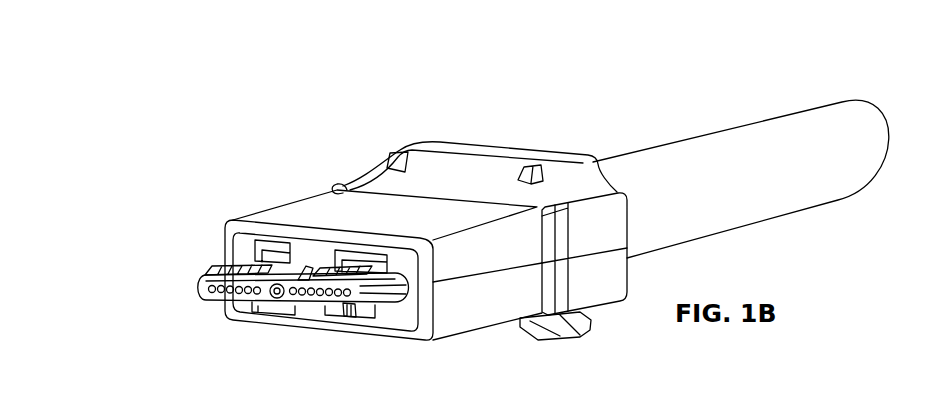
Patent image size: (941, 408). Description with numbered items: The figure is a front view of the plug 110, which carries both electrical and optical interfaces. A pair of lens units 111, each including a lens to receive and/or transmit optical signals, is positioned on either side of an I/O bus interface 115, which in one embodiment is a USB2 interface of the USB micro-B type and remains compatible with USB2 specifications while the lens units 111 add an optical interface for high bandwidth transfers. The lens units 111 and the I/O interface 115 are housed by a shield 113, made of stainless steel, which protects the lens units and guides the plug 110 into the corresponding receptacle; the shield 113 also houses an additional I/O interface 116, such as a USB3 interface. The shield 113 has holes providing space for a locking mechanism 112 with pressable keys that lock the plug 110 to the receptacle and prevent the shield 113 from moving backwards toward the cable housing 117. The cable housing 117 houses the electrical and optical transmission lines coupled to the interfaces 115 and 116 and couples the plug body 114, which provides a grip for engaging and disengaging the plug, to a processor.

The plug 110 is at (500, 71).
The pair of lens units 111 is at (350, 312).
The locking mechanism 112 is at (310, 265).
The shield 113 is at (214, 264).
The plug body 114 is at (261, 209).
The I/O bus interface 115 is at (255, 307).
The additional I/O interface 116 is at (209, 273).
The cable housing 117 is at (662, 148).